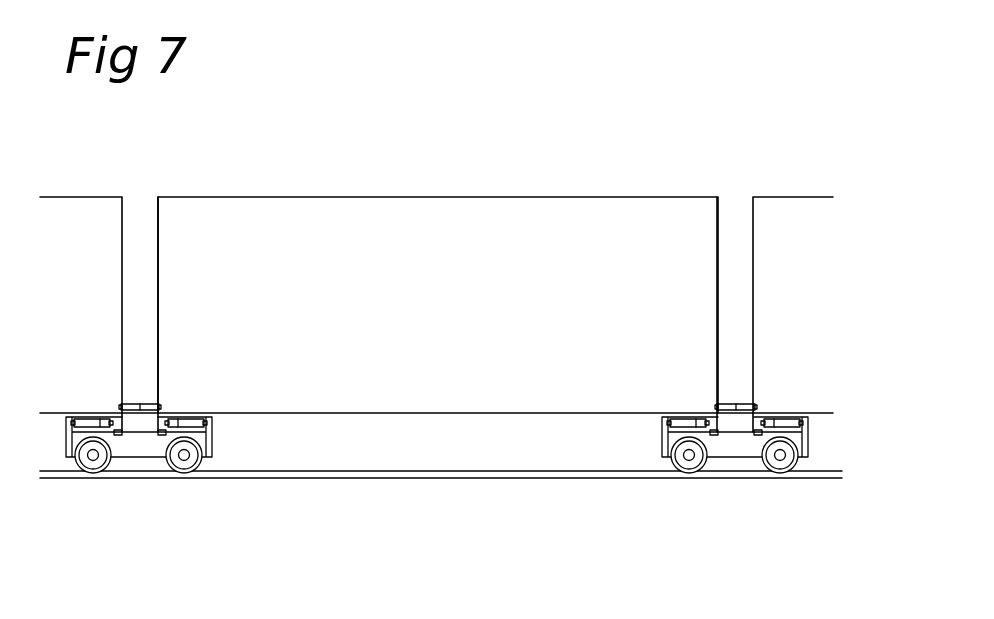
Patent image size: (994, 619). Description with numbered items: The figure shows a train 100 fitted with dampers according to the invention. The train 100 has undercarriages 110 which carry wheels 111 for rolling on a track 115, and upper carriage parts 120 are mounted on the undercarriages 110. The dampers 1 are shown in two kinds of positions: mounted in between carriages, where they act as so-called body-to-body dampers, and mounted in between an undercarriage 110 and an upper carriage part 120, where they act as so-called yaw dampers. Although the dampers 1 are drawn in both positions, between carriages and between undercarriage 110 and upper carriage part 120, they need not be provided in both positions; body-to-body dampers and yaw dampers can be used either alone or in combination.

The damper 1 is at (78, 434).
The train 100 is at (417, 185).
The undercarriage 110 is at (70, 457).
The wheel 111 is at (177, 467).
The track 115 is at (348, 473).
The upper carriage part 120 is at (77, 218).